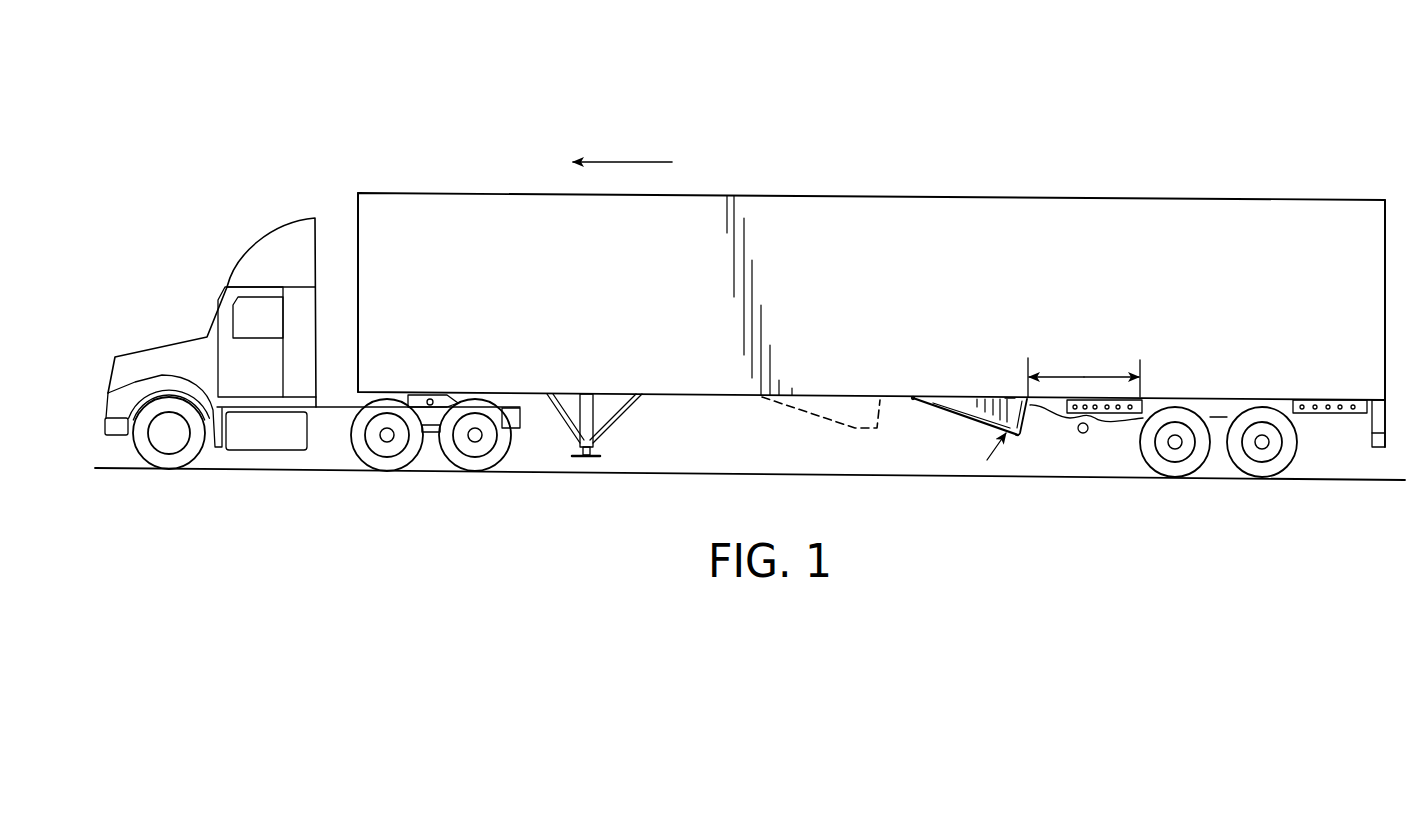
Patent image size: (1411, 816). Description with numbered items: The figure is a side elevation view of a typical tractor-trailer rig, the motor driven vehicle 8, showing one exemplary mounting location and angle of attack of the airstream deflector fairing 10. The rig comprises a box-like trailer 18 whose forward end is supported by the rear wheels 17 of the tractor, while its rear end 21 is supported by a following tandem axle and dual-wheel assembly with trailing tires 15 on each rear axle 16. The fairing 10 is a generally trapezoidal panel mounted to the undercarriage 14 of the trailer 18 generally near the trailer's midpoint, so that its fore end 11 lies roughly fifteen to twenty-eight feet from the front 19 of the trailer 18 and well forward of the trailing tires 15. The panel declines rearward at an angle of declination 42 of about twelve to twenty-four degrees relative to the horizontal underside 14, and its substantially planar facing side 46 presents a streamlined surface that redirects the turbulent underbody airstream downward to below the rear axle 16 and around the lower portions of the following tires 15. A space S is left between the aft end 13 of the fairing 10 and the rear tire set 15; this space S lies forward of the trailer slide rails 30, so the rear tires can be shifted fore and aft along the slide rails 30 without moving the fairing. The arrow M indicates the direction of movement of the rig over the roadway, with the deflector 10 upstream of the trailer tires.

The motor driven vehicle 8 is at (433, 112).
The airstream deflector fairing 10 is at (793, 423).
The fore end of the fairing 11 is at (910, 403).
The aft end of the fairing 13 is at (1030, 423).
The undercarriage 14 is at (853, 400).
The trailing tires 15 is at (1233, 469).
The rear axle 16 is at (1177, 438).
The tractor rear wheels 17 is at (443, 469).
The trailer 18 is at (902, 195).
The front of the trailer 19 is at (358, 215).
The rear end of the trailer 21 is at (1387, 235).
The trailer slide rails 30 is at (1323, 415).
The angle of declination 42 is at (1010, 397).
The planar facing side 46 is at (973, 407).
The direction of movement M is at (628, 162).
The space S is at (1087, 375).